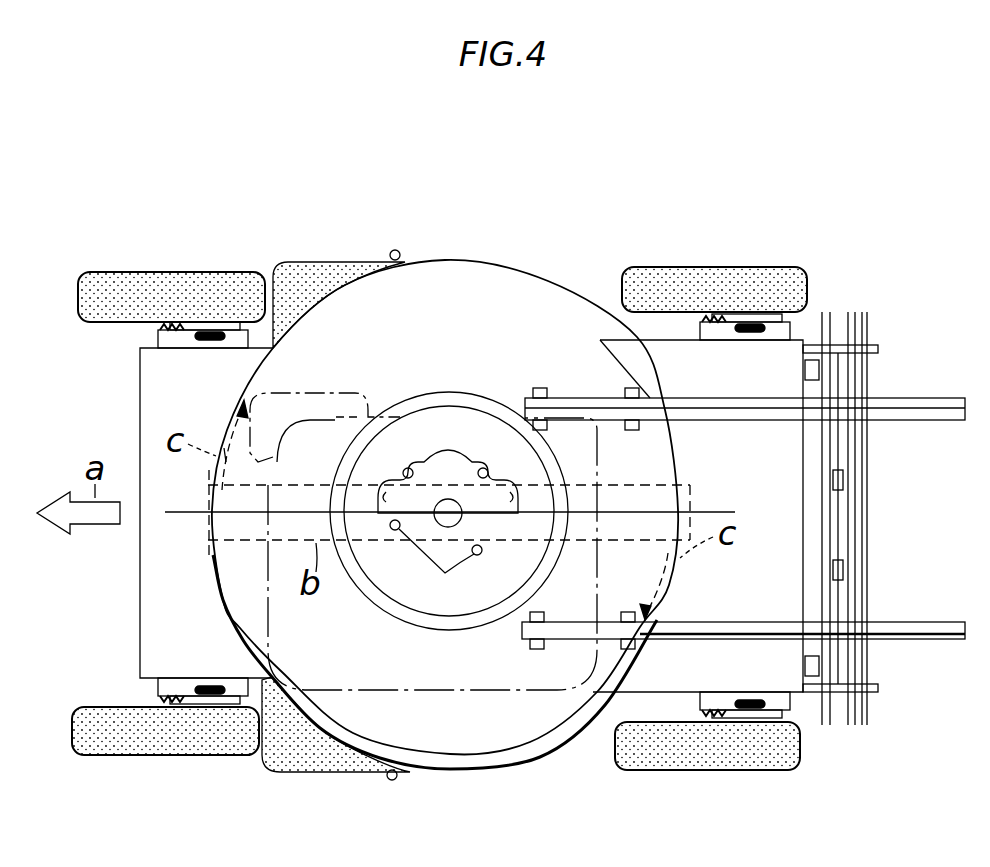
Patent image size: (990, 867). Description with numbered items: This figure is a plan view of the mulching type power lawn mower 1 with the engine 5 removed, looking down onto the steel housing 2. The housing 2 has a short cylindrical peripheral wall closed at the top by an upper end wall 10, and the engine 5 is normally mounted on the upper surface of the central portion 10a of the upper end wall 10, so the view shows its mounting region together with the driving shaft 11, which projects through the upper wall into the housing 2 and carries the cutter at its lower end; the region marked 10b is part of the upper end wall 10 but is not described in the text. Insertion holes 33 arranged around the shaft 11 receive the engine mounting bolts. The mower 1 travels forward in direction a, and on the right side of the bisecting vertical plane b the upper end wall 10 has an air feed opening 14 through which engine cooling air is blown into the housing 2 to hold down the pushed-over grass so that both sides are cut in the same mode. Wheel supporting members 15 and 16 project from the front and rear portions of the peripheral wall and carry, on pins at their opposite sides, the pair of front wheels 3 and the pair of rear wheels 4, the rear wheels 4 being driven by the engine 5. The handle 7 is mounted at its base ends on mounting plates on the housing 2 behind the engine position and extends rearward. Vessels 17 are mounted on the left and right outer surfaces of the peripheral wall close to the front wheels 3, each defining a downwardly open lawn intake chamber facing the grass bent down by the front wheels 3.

The power lawn mower 1 is at (404, 240).
The housing 2 is at (503, 252).
The front wheels 3 is at (170, 290).
The rear wheels 4 is at (714, 282).
The engine 5 is at (414, 692).
The handle 7 is at (902, 405).
The upper end wall 10 is at (404, 598).
The central portion of the upper end wall 10a is at (474, 596).
The upper chamber 10b is at (555, 295).
The driving shaft 11 is at (452, 500).
The air feed opening 14 is at (441, 450).
The front wheel supporting member 15 is at (157, 382).
The rear wheel supporting member 16 is at (790, 511).
The vessels 17 is at (318, 275).
The insertion hole 33 is at (403, 470).